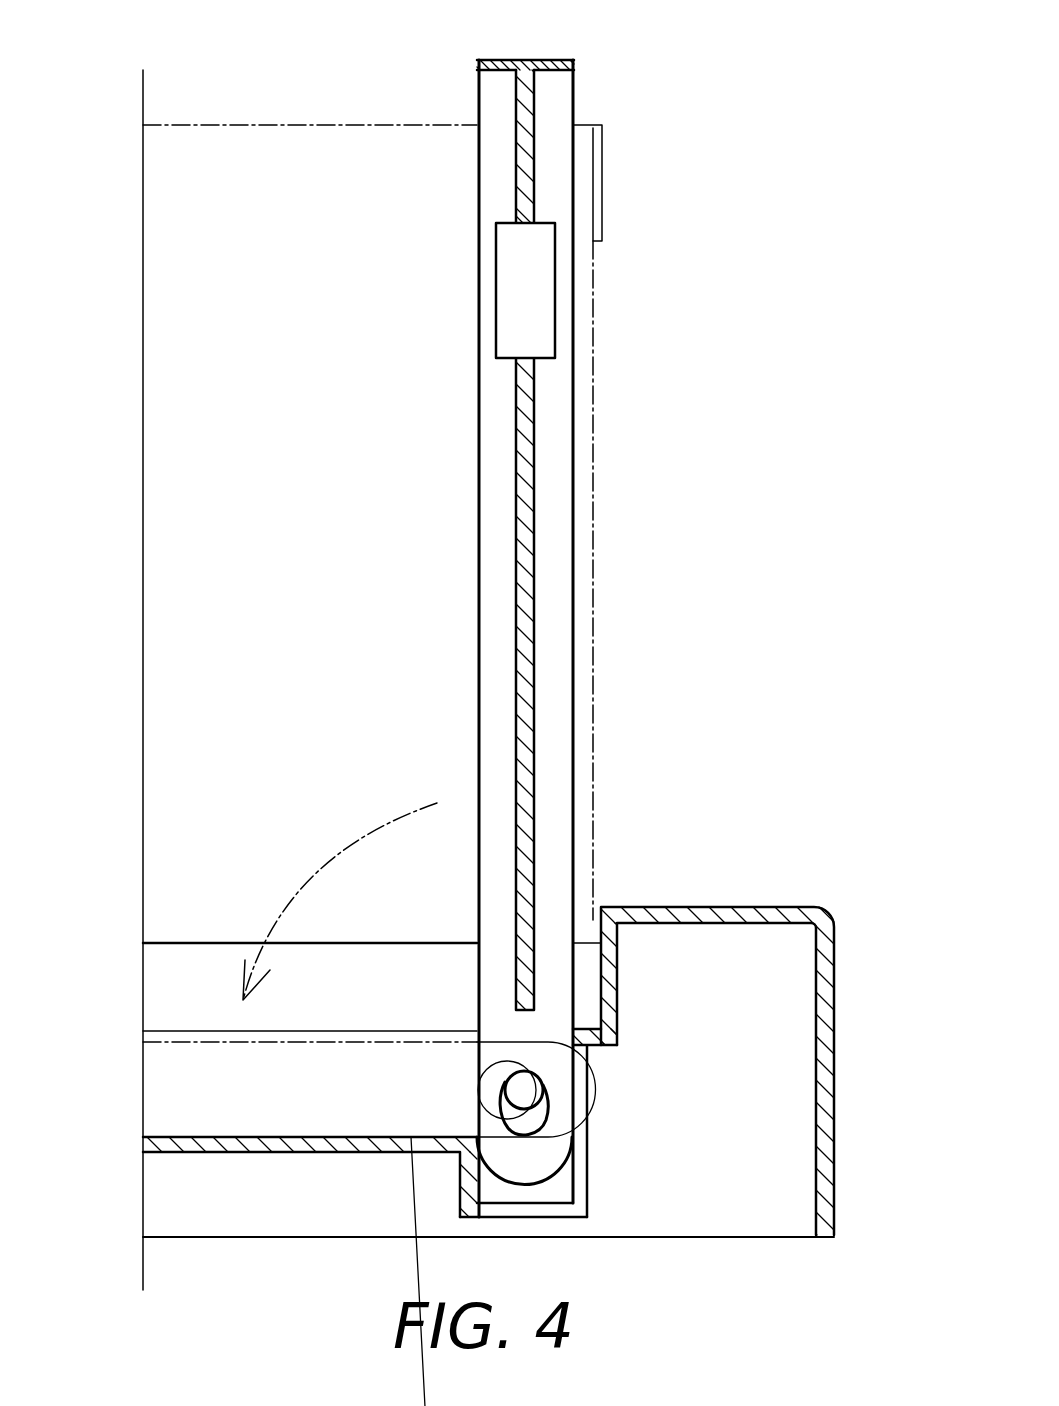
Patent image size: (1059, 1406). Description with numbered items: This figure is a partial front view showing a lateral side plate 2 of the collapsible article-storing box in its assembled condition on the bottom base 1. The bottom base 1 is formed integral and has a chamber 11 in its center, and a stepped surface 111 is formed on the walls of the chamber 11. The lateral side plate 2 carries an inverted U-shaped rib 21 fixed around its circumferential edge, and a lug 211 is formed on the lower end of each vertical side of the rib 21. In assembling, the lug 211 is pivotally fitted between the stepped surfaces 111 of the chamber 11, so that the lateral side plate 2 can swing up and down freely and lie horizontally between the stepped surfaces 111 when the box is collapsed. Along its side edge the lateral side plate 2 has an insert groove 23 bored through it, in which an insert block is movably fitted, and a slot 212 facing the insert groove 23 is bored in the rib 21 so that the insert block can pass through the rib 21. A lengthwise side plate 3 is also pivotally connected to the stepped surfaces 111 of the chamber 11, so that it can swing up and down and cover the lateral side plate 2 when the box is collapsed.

The bottom base 1 is at (723, 915).
The chamber 11 is at (182, 1093).
The stepped surface 111 is at (185, 1031).
The lateral side plate 2 is at (524, 464).
The inverted U-shaped rib 21 is at (548, 62).
The lug 211 is at (545, 1162).
The slot 212 is at (534, 310).
The insert groove 23 is at (522, 223).
The lengthwise side plate 3 is at (296, 180).